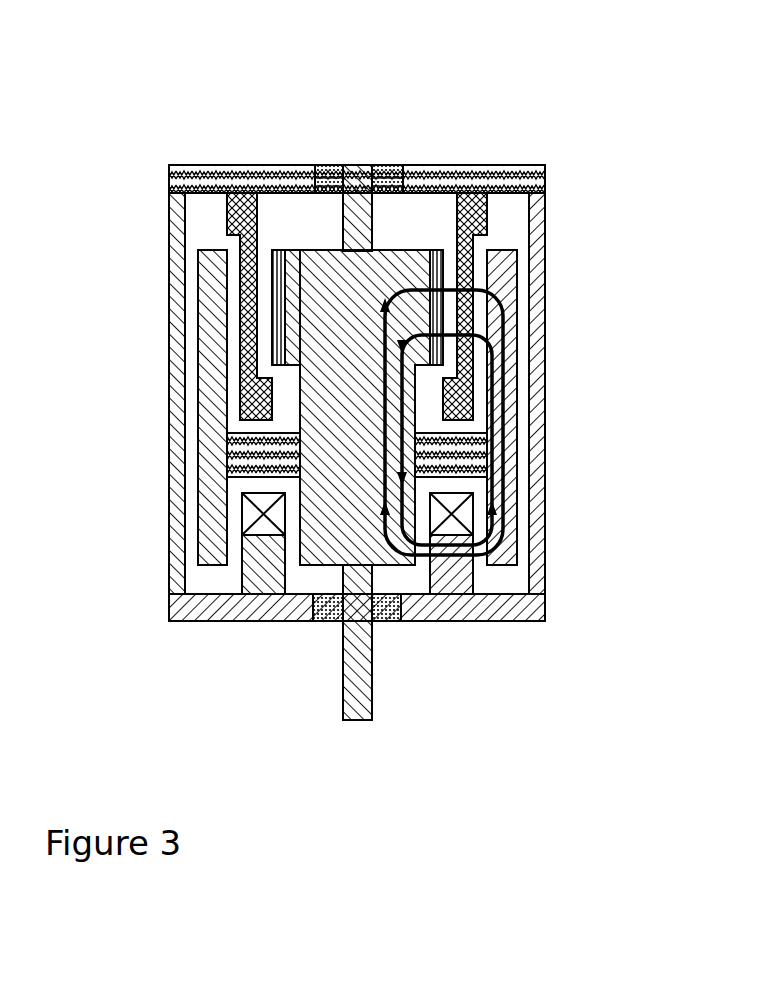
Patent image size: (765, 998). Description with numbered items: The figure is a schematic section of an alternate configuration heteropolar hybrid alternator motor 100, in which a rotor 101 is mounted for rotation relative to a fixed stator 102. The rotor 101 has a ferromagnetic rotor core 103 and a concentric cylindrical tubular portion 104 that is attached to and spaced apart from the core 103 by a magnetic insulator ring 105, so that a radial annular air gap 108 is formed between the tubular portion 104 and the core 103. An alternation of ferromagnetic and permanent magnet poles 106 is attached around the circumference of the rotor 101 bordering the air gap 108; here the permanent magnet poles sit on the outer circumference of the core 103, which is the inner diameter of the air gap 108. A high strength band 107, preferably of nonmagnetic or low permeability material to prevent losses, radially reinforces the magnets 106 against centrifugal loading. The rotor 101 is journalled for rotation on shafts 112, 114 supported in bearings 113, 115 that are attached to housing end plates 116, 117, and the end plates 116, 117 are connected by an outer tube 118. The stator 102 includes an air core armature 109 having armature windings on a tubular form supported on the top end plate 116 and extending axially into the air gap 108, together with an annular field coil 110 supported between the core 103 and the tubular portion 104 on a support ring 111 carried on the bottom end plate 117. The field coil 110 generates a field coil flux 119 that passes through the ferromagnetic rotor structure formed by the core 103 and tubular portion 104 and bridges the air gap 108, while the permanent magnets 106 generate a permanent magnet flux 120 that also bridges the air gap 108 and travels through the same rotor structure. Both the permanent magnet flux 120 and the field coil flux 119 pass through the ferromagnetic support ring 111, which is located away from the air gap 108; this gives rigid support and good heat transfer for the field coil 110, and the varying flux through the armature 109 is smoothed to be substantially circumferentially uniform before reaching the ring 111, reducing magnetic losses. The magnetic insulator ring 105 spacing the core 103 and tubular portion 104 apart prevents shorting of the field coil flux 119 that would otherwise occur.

The heteropolar hybrid alternator motor 100 is at (156, 50).
The rotor 101 is at (398, 222).
The stator 102 is at (496, 162).
The rotor core 103 is at (299, 567).
The tubular portion 104 is at (198, 545).
The magnetic insulator ring 105 is at (240, 453).
The ferromagnetic and permanent magnet poles 106 is at (290, 250).
The high strength band 107 is at (277, 248).
The air gap 108 is at (215, 238).
The air core armature 109 is at (227, 210).
The field coil 110 is at (242, 505).
The support ring 111 is at (238, 568).
The shaft 112 is at (356, 165).
The bearing 113 is at (327, 165).
The shaft 114 is at (372, 700).
The bearing 115 is at (388, 623).
The top end plate 116 is at (545, 173).
The bottom end plate 117 is at (512, 622).
The outer tube 118 is at (545, 533).
The field coil flux 119 is at (512, 482).
The permanent magnet flux 120 is at (515, 433).